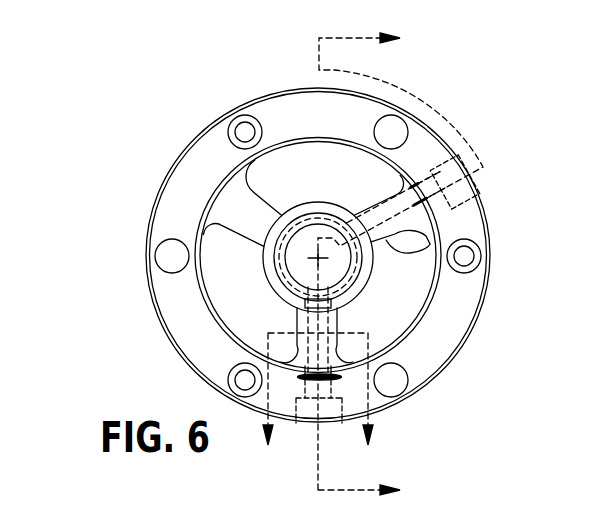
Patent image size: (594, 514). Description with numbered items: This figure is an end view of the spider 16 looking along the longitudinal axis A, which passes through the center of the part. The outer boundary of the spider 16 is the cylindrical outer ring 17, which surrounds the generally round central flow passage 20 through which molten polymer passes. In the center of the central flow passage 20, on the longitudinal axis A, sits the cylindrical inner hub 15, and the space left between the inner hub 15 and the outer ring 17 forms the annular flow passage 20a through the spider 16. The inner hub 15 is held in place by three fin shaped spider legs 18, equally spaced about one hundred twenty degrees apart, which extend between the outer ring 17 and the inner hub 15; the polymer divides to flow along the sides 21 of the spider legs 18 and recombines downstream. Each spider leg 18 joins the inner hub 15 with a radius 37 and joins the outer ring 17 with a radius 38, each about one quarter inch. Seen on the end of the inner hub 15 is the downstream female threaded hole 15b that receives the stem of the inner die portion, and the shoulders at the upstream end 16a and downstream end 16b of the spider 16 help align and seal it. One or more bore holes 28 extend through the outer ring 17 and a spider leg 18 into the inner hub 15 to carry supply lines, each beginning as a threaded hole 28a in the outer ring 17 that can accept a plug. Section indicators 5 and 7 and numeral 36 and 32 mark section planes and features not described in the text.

The spider 16 is at (193, 142).
The upstream end 16a is at (354, 438).
The downstream end 16b is at (407, 347).
The outer ring 17 is at (162, 207).
The spider legs 18 is at (222, 217).
The central flow passage 20 is at (411, 303).
The annular flow passage 20a is at (393, 318).
The sides 21 is at (257, 197).
The bore holes 28 is at (389, 204).
The threaded hole 28a is at (472, 190).
The hole 32 is at (164, 274).
The inner hub 15 is at (267, 283).
The downstream female threaded hole 15b is at (363, 284).
The key 36 is at (283, 297).
The radius 37 is at (334, 150).
The radius 38 is at (265, 182).
The longitudinal axis A is at (316, 257).
The section line 5- 5 is at (400, 266).
The section line 7- 7 is at (317, 404).